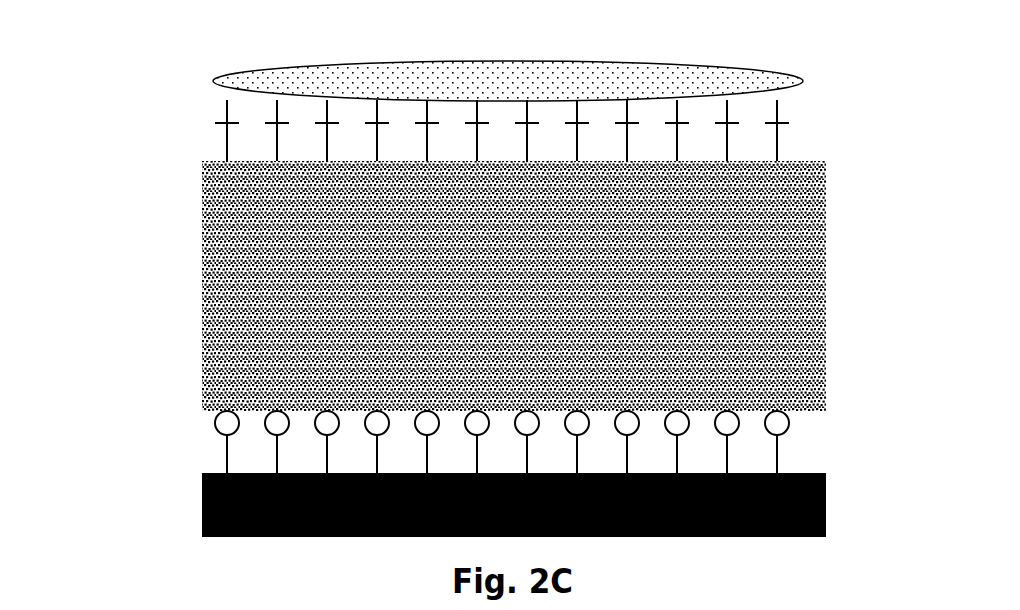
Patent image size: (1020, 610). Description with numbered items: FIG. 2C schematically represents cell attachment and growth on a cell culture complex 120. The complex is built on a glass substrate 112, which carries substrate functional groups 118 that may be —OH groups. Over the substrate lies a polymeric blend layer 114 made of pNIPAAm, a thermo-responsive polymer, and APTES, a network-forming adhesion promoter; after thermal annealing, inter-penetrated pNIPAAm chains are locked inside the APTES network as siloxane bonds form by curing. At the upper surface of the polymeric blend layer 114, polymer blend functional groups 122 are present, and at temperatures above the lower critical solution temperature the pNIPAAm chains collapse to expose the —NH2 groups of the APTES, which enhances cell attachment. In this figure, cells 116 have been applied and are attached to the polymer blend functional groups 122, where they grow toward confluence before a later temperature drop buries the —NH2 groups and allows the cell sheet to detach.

The glass substrate 112 is at (829, 510).
The polymeric blend layer 114 is at (828, 262).
The cells 116 is at (227, 73).
The substrate functional groups 118 is at (778, 448).
The cell culture complex 120 is at (158, 232).
The polymer blend functional groups 122 is at (780, 98).